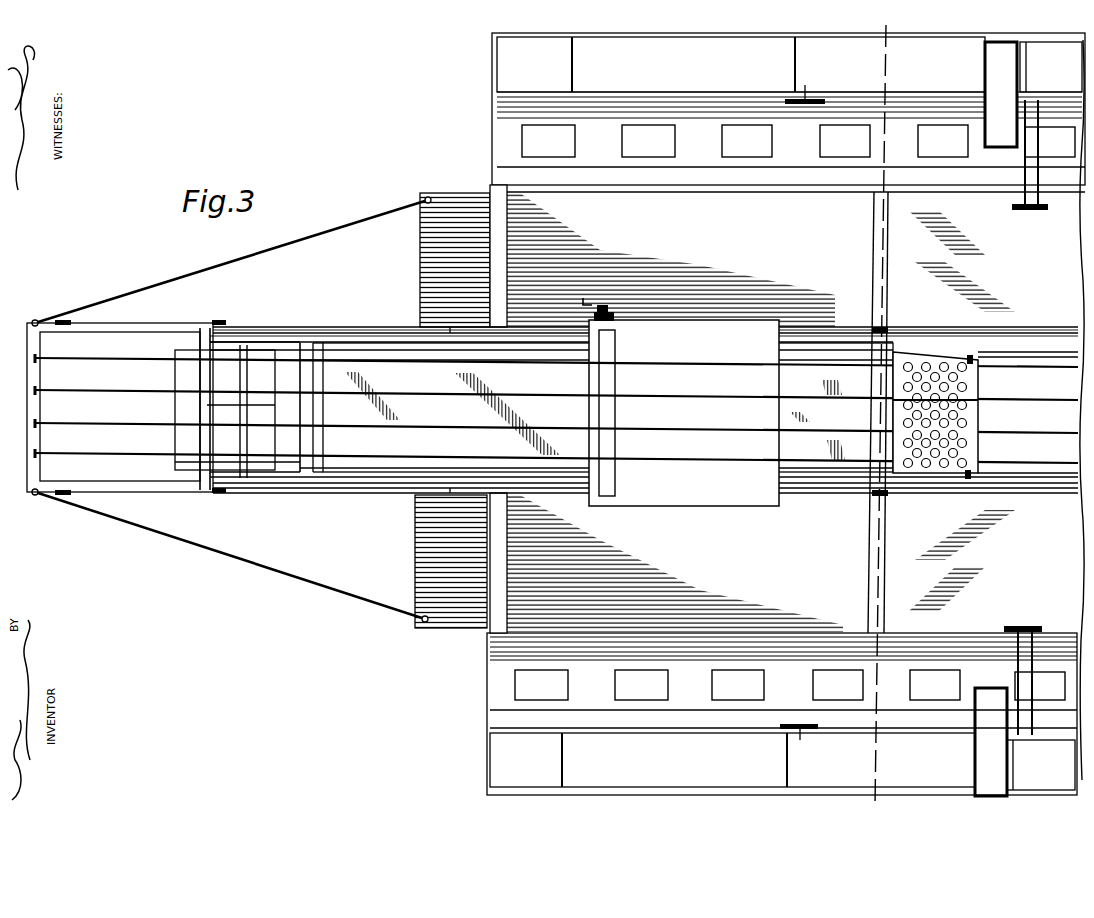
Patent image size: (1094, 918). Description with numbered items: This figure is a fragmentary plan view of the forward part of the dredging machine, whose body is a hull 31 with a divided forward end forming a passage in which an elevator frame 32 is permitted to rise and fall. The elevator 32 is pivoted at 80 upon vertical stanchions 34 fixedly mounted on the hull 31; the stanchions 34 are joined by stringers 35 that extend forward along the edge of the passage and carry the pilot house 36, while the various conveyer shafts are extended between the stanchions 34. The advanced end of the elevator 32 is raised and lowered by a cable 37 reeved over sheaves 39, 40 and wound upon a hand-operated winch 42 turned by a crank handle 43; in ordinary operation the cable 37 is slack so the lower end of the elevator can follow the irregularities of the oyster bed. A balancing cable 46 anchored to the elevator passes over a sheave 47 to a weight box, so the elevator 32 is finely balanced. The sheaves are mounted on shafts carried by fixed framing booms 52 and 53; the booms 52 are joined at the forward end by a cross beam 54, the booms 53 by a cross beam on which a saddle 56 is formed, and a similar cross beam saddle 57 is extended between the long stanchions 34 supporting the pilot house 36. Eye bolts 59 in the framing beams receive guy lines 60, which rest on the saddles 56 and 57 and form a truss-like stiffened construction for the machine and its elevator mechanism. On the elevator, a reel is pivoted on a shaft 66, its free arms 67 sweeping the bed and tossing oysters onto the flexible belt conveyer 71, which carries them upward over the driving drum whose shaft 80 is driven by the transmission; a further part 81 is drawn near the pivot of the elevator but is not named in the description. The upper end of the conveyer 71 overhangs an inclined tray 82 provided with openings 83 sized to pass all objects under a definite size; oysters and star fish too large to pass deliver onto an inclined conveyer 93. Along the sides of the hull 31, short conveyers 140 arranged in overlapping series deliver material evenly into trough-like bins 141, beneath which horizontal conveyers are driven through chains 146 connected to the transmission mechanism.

The hull 31 is at (428, 556).
The elevator frame 32 is at (782, 352).
The vertical stanchions 34 is at (971, 355).
The stringers 35 is at (942, 342).
The pilot house 36 is at (703, 498).
The cable 37 is at (262, 330).
The sheave 39 is at (63, 318).
The sheave 40 is at (228, 316).
The winch 42 is at (615, 318).
The crank handle 43 is at (592, 300).
The balancing cable 46 is at (261, 486).
The sheave 47 is at (218, 494).
The framing booms 52 is at (342, 330).
The framing booms 53 is at (296, 334).
The cross beam 54 is at (30, 465).
The saddle 56 is at (205, 441).
The cross beam saddle 57 is at (612, 354).
The eye bolts 59 is at (33, 424).
The guy lines 60 is at (104, 371).
The shaft 66 is at (244, 441).
The reel arms 67 is at (183, 378).
The conveyer 71 is at (345, 439).
The pivot / drum shaft 80 is at (892, 332).
The pin 81 is at (873, 328).
The tray 82 is at (968, 395).
The openings 83 is at (898, 420).
The conveyer 93 is at (1028, 455).
The short conveyers 140 is at (578, 62).
The bins 141 is at (505, 134).
The chains 146 is at (1030, 627).